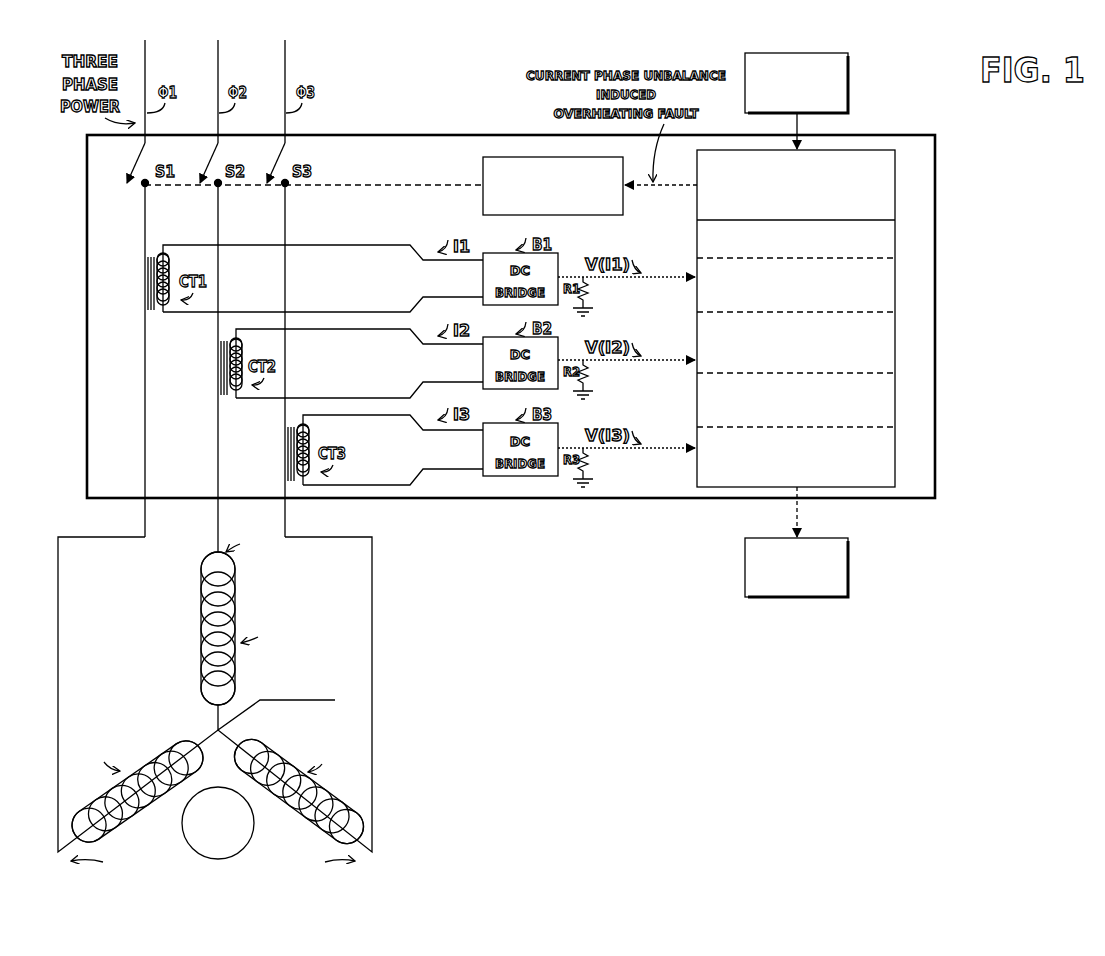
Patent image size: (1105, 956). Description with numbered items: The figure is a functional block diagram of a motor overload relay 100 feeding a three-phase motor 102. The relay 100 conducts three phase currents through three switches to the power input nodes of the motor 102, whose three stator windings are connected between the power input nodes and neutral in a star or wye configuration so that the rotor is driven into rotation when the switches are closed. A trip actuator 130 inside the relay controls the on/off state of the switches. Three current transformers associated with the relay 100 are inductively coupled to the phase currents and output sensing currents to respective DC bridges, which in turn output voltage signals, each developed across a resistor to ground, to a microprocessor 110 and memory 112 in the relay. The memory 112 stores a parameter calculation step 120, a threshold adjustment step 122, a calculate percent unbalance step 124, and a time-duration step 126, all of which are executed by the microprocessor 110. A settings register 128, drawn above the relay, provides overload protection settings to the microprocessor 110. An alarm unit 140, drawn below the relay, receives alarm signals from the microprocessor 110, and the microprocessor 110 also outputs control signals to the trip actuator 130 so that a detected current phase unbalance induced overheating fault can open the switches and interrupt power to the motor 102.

The motor overload relay 100 is at (684, 512).
The three-phase motor 102 is at (146, 662).
The microprocessor 110 is at (796, 318).
The memory 112 is at (796, 239).
The parameter calculation step 120 is at (796, 285).
The threshold adjustment step 122 is at (796, 342).
The calculate % unbalance step 124 is at (796, 400).
The time-duration step 126 is at (796, 457).
The settings register 128 is at (796, 83).
The trip actuator 130 is at (553, 186).
The alarm unit 140 is at (796, 567).